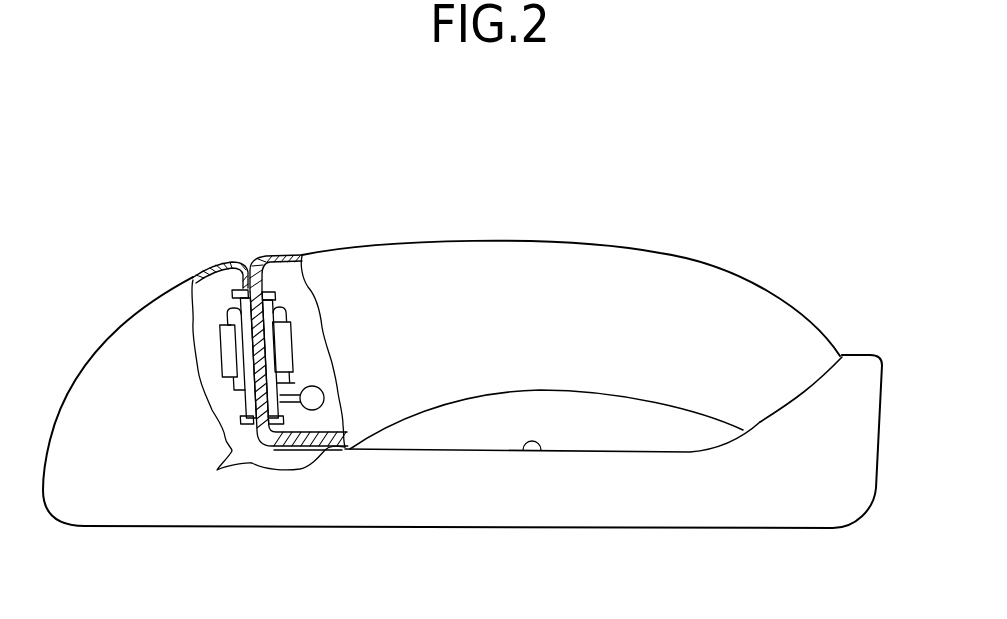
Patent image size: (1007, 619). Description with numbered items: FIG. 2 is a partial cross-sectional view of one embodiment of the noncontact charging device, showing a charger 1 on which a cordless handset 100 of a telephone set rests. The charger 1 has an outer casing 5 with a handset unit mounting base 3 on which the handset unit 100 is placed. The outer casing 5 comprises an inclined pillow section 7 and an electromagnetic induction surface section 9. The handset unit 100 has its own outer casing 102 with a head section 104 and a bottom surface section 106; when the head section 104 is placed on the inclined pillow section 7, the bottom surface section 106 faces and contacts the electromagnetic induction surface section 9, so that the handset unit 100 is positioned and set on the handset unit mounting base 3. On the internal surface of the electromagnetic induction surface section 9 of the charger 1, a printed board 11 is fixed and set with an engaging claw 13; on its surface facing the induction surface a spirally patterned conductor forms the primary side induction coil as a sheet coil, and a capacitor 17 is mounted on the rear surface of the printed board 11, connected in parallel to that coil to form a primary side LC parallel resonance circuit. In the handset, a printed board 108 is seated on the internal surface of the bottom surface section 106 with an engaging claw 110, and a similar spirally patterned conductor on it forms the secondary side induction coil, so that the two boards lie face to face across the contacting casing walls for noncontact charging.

The charger 1 is at (147, 332).
The handset unit mounting base 3 is at (537, 451).
The outer casing 5 is at (215, 266).
The inclined pillow section 7 is at (793, 407).
The electromagnetic induction surface section 9 is at (284, 376).
The printed board 11 is at (233, 386).
The engaging claw 13 is at (233, 290).
The capacitor 17 is at (228, 351).
The cordless handset 100 is at (562, 283).
The outer casing 102 is at (285, 255).
The head section 104 is at (813, 358).
The bottom surface section 106 is at (286, 308).
The printed board 108 is at (293, 345).
The engaging claw 110 is at (278, 284).